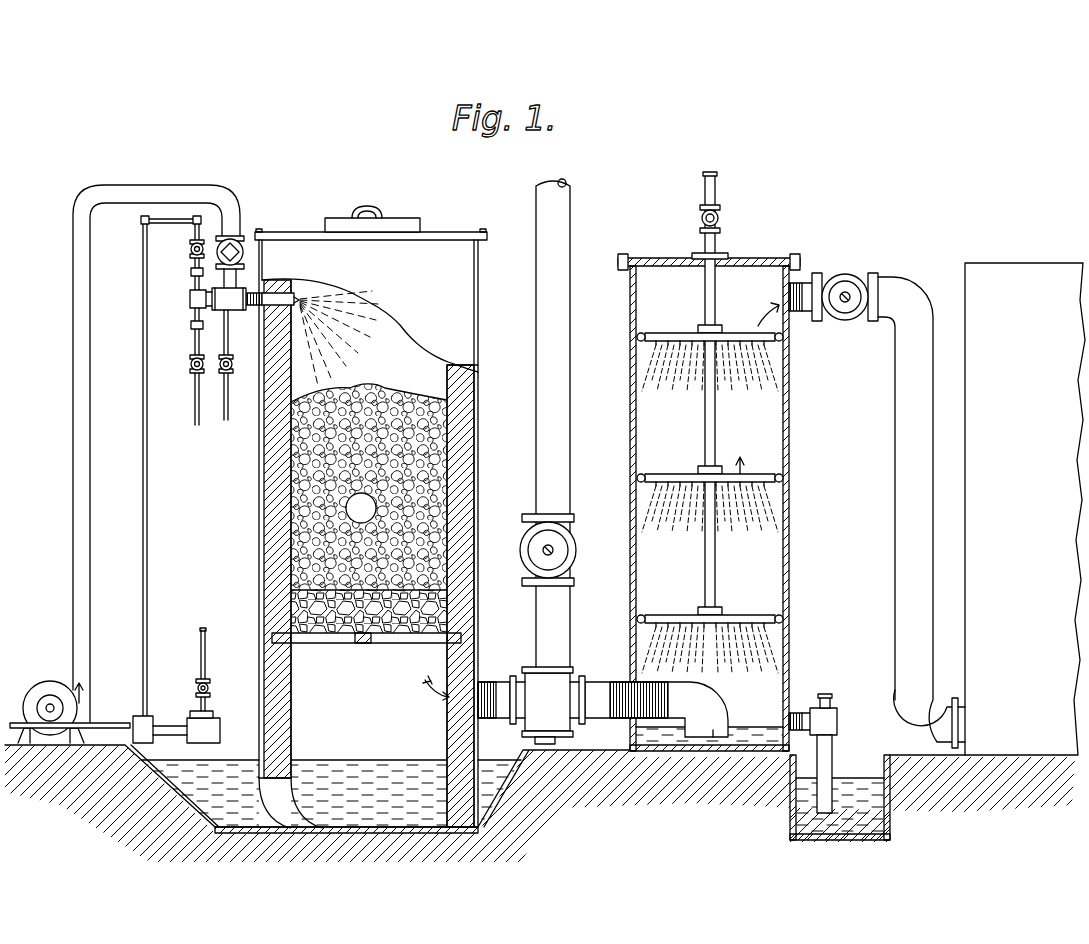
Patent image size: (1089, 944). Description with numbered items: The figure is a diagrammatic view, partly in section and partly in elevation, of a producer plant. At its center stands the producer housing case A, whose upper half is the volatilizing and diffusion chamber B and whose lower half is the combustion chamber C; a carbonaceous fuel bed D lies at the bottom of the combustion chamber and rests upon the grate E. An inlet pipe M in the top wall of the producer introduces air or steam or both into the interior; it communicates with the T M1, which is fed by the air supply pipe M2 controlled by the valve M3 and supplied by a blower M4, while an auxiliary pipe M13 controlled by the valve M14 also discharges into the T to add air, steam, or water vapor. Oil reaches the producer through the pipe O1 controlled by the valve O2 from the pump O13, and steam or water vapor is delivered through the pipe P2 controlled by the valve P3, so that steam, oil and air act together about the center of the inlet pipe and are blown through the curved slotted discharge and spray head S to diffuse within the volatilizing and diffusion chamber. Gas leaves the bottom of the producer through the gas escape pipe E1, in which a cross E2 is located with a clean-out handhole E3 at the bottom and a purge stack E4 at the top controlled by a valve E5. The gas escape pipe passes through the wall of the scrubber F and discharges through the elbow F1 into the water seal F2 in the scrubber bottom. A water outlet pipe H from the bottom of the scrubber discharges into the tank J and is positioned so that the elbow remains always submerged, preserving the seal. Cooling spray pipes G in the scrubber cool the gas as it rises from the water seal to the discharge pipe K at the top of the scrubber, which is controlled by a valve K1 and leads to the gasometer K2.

The producer housing case A is at (482, 435).
The volatilizing and diffusion chamber B is at (370, 325).
The combustion chamber C is at (369, 487).
The carbonaceous fuel bed D is at (300, 606).
The grate E is at (343, 642).
The gas escape pipe E1 is at (594, 688).
The cross E2 is at (547, 702).
The clean-out handhole E3 is at (560, 745).
The purge stack E4 is at (583, 604).
The valve E5 is at (566, 550).
The scrubber F is at (630, 397).
The elbow F1 is at (712, 703).
The water seal F2 is at (742, 730).
The cooling spray pipes G is at (685, 614).
The water outlet pipe H is at (803, 714).
The tank J is at (838, 765).
The discharge pipe K is at (896, 478).
The valve K1 is at (845, 305).
The gasometer K2 is at (1025, 509).
The inlet pipe M is at (289, 315).
The T M1 is at (230, 312).
The air supply pipe M2 is at (240, 220).
The valve M3 is at (245, 257).
The blower M4 is at (50, 690).
The auxiliary pipe M13 is at (222, 420).
The valve M14 is at (215, 376).
The pipe O1 is at (190, 284).
The valve O2 is at (191, 246).
The pump O13 is at (150, 718).
The pipe P2 is at (193, 348).
The valve P3 is at (191, 370).
The curved slotted discharge and spray head S is at (305, 298).